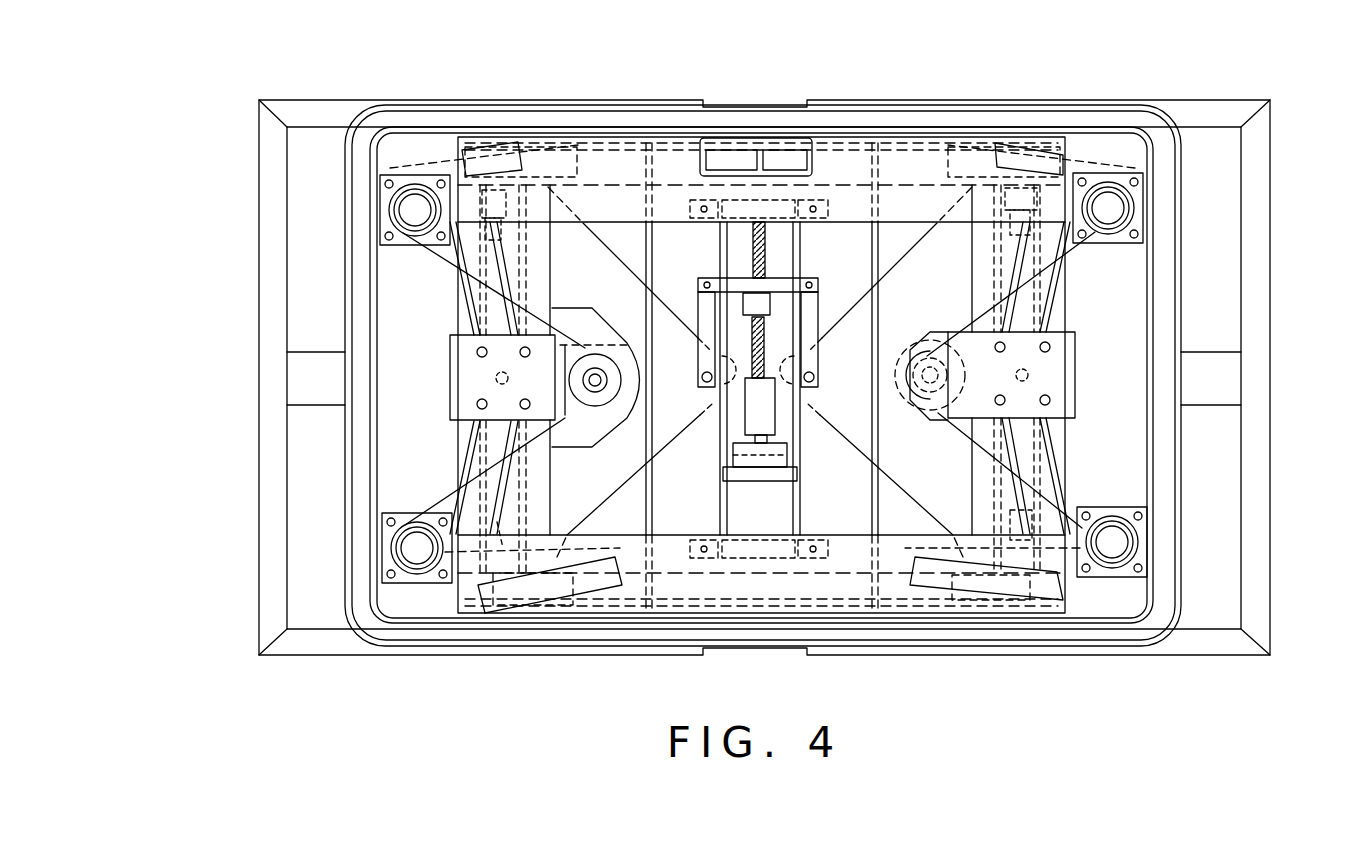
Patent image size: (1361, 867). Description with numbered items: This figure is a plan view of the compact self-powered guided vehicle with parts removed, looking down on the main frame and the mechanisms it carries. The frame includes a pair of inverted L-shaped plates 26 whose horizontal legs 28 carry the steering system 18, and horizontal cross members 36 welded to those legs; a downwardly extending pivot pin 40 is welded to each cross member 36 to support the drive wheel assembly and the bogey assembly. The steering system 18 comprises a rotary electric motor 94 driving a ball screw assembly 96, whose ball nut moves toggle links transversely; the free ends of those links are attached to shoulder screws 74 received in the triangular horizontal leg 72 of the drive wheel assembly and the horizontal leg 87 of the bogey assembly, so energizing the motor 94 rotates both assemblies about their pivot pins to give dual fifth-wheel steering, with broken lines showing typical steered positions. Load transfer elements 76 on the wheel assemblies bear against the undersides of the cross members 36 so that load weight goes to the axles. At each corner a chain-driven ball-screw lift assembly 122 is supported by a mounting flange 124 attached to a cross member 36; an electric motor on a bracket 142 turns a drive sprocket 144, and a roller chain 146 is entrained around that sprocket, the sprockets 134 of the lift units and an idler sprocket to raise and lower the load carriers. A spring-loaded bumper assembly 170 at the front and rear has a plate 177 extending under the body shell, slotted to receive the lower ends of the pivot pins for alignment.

The steering system 18 is at (728, 466).
The inverted L-shaped plate 26 is at (840, 222).
The horizontal leg 28 is at (761, 377).
The horizontal cross member 36 is at (405, 119).
The pivot pin 40 is at (494, 378).
The horizontal leg 72 is at (890, 372).
The shoulder screw 74 is at (710, 372).
The load transfer element 76 is at (506, 186).
The horizontal leg 87 is at (630, 372).
The rotary electric motor 94 is at (800, 494).
The ball screw assembly 96 is at (752, 250).
The lift assembly 122 is at (413, 180).
The mounting flange 124 is at (430, 244).
The drive sprocket 134 is at (386, 205).
The bracket 142 is at (466, 428).
The drive sprocket 144 is at (588, 416).
The roller chain 146 is at (814, 162).
The bumper assembly 170 is at (1272, 232).
The plate 177 is at (304, 352).